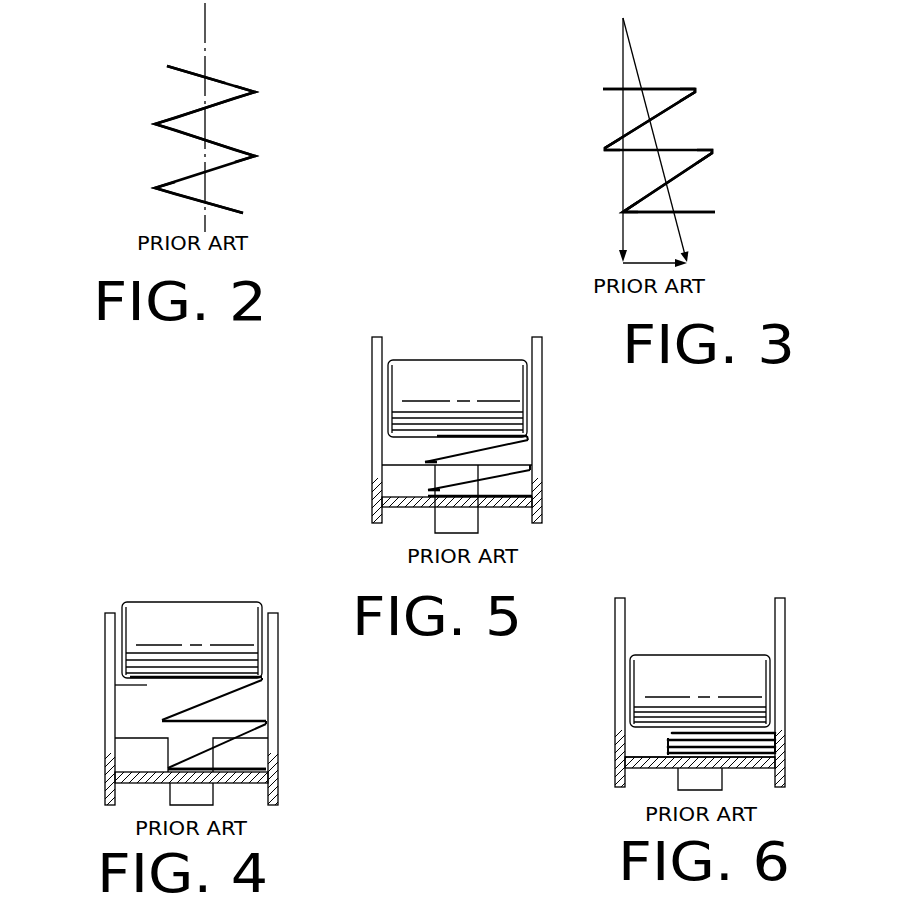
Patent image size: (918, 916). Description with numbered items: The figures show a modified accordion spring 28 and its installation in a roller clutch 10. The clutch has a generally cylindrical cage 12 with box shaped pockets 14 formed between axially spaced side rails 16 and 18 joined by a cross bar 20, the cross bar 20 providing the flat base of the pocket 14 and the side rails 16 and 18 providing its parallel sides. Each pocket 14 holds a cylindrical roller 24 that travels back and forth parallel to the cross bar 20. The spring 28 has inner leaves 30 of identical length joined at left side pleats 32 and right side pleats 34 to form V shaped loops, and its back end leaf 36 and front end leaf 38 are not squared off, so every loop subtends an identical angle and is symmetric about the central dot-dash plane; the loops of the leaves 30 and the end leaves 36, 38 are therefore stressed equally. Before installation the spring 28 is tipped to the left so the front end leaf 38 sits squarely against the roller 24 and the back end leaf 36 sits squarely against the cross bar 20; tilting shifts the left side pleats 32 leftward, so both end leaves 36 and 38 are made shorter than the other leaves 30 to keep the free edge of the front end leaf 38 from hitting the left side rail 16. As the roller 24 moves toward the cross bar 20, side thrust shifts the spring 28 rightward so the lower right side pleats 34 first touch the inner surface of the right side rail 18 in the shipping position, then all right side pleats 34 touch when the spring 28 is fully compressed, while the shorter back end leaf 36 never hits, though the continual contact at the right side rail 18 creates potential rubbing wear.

In FIG. 5, the roller clutch 10 is at (448, 420).
In FIG. 4, the roller clutch 10 is at (193, 686).
In FIG. 6, the roller clutch 10 is at (690, 691).
In FIG. 5, the cage 12 is at (364, 466).
In FIG. 4, the cage 12 is at (99, 786).
In FIG. 6, the cage 12 is at (609, 782).
In FIG. 5, the pocket 14 is at (388, 435).
In FIG. 4, the pocket 14 is at (147, 685).
In FIG. 6, the pocket 14 is at (630, 736).
In FIG. 5, the left side rail 16 is at (375, 388).
In FIG. 4, the left side rail 16 is at (112, 668).
In FIG. 6, the left side rail 16 is at (622, 617).
In FIG. 5, the right side rail 18 is at (538, 380).
In FIG. 4, the right side rail 18 is at (270, 643).
In FIG. 6, the right side rail 18 is at (782, 635).
In FIG. 5, the cross bar 20 is at (415, 506).
In FIG. 4, the cross bar 20 is at (235, 783).
In FIG. 6, the cross bar 20 is at (668, 763).
In FIG. 5, the roller 24 is at (455, 388).
In FIG. 4, the roller 24 is at (222, 642).
In FIG. 6, the roller 24 is at (723, 695).
In FIG. 2, the spring 28 is at (250, 124).
In FIG. 3, the spring 28 is at (606, 114).
In FIG. 5, the spring 28 is at (459, 473).
In FIG. 4, the spring 28 is at (194, 725).
In FIG. 6, the spring 28 is at (696, 751).
In FIG. 2, the inner leaves 30 is at (193, 108).
In FIG. 3, the inner leaves 30 is at (682, 103).
In FIG. 5, the inner leaves 30 is at (470, 463).
In FIG. 4, the inner leaves 30 is at (217, 718).
In FIG. 6, the inner leaves 30 is at (707, 750).
In FIG. 2, the left side pleats 32 is at (153, 123).
In FIG. 3, the left side pleats 32 is at (605, 150).
In FIG. 5, the left side pleats 32 is at (425, 465).
In FIG. 4, the left side pleats 32 is at (168, 768).
In FIG. 6, the left side pleats 32 is at (668, 741).
In FIG. 2, the right side pleats 34 is at (257, 94).
In FIG. 3, the right side pleats 34 is at (696, 91).
In FIG. 5, the right side pleats 34 is at (531, 442).
In FIG. 4, the right side pleats 34 is at (268, 720).
In FIG. 6, the right side pleats 34 is at (777, 741).
In FIG. 2, the back end leaf 36 is at (190, 203).
In FIG. 3, the back end leaf 36 is at (697, 214).
In FIG. 5, the back end leaf 36 is at (498, 498).
In FIG. 4, the back end leaf 36 is at (205, 780).
In FIG. 6, the back end leaf 36 is at (748, 763).
In FIG. 2, the front end leaf 38 is at (221, 79).
In FIG. 3, the front end leaf 38 is at (675, 88).
In FIG. 5, the front end leaf 38 is at (507, 435).
In FIG. 4, the front end leaf 38 is at (233, 677).
In FIG. 6, the front end leaf 38 is at (748, 731).